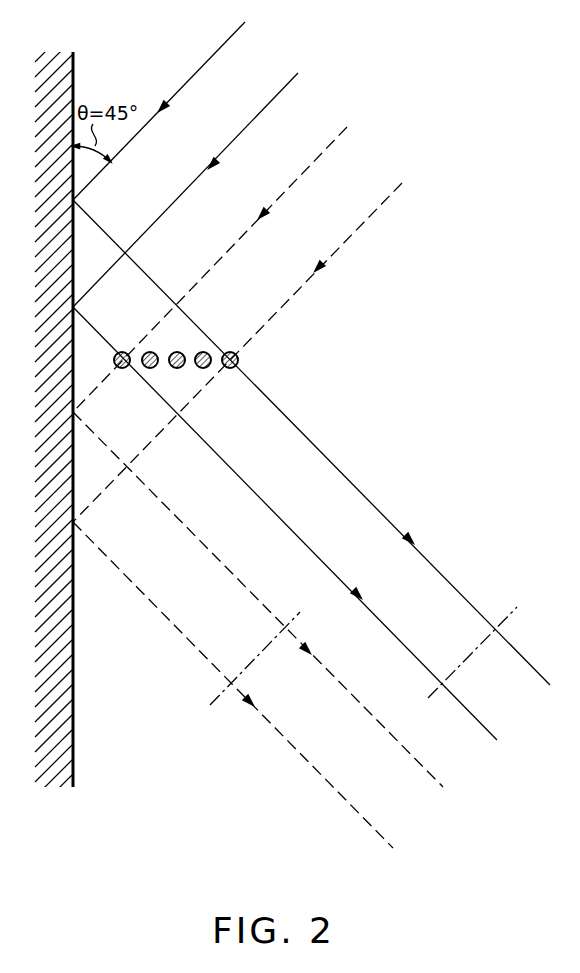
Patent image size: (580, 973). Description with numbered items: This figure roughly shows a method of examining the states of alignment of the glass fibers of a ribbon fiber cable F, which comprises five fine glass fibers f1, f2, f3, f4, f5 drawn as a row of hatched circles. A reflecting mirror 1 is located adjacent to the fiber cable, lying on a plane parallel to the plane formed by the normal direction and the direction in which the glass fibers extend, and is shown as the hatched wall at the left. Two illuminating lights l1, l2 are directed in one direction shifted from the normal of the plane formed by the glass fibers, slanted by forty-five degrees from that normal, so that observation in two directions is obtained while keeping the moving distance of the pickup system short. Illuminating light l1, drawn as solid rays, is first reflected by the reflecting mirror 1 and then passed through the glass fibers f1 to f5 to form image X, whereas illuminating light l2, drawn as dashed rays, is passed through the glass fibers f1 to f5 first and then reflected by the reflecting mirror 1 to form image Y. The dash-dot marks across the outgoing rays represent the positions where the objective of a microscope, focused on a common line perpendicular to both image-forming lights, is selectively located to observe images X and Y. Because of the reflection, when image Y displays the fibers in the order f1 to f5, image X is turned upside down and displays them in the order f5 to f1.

The reflecting mirror 1 is at (75, 728).
The illuminating light l1 is at (311, 381).
The illuminating light l2 is at (258, 487).
The ribbon fiber cable F is at (205, 359).
The glass fiber f1 is at (122, 352).
The glass fiber f2 is at (155, 366).
The glass fiber f3 is at (177, 352).
The glass fiber f4 is at (208, 366).
The glass fiber f5 is at (230, 352).
The image X is at (481, 656).
The image Y is at (309, 723).